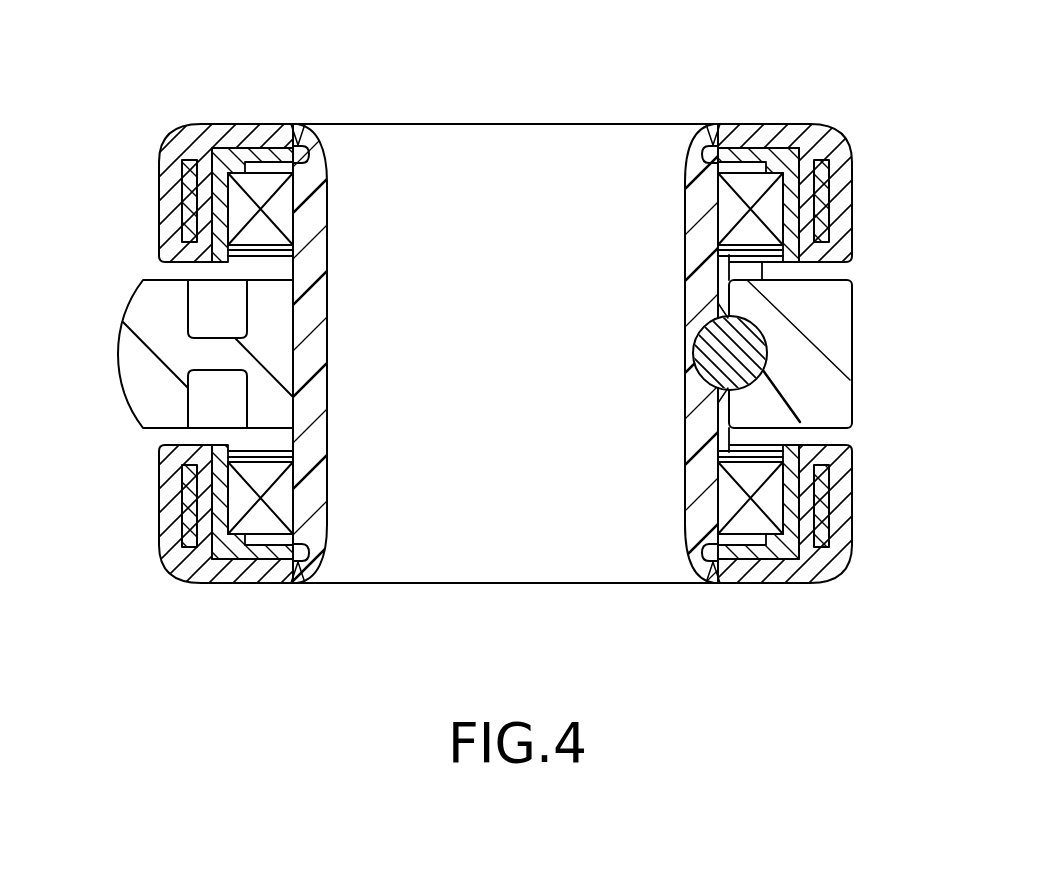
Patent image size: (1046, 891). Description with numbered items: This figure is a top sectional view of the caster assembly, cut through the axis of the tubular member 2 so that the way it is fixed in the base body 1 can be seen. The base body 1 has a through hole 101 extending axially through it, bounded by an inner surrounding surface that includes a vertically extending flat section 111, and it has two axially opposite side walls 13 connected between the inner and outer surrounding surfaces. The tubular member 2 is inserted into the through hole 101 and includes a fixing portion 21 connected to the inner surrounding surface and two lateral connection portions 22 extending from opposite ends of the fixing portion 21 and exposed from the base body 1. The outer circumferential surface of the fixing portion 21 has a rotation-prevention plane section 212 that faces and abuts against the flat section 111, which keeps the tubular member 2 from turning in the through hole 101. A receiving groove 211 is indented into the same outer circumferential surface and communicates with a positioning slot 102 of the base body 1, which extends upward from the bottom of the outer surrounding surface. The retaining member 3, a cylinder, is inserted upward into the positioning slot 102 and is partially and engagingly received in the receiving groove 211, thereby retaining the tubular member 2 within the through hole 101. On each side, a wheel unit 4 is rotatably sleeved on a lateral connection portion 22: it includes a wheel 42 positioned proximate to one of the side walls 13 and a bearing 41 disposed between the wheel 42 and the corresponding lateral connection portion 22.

The base body 1 is at (828, 325).
The through hole 101 is at (491, 185).
The positioning slot 102 is at (765, 319).
The flat section 111 is at (294, 318).
The side walls 13 is at (762, 270).
The tubular member 2 is at (505, 329).
The fixing portion 21 is at (703, 427).
The receiving groove 211 is at (688, 357).
The rotation-prevention plane section 212 is at (294, 349).
The lateral connection portions 22 is at (695, 207).
The retaining member 3 is at (735, 362).
The wheel units 4 is at (152, 152).
The bearing 41 is at (258, 182).
The wheel 42 is at (209, 137).